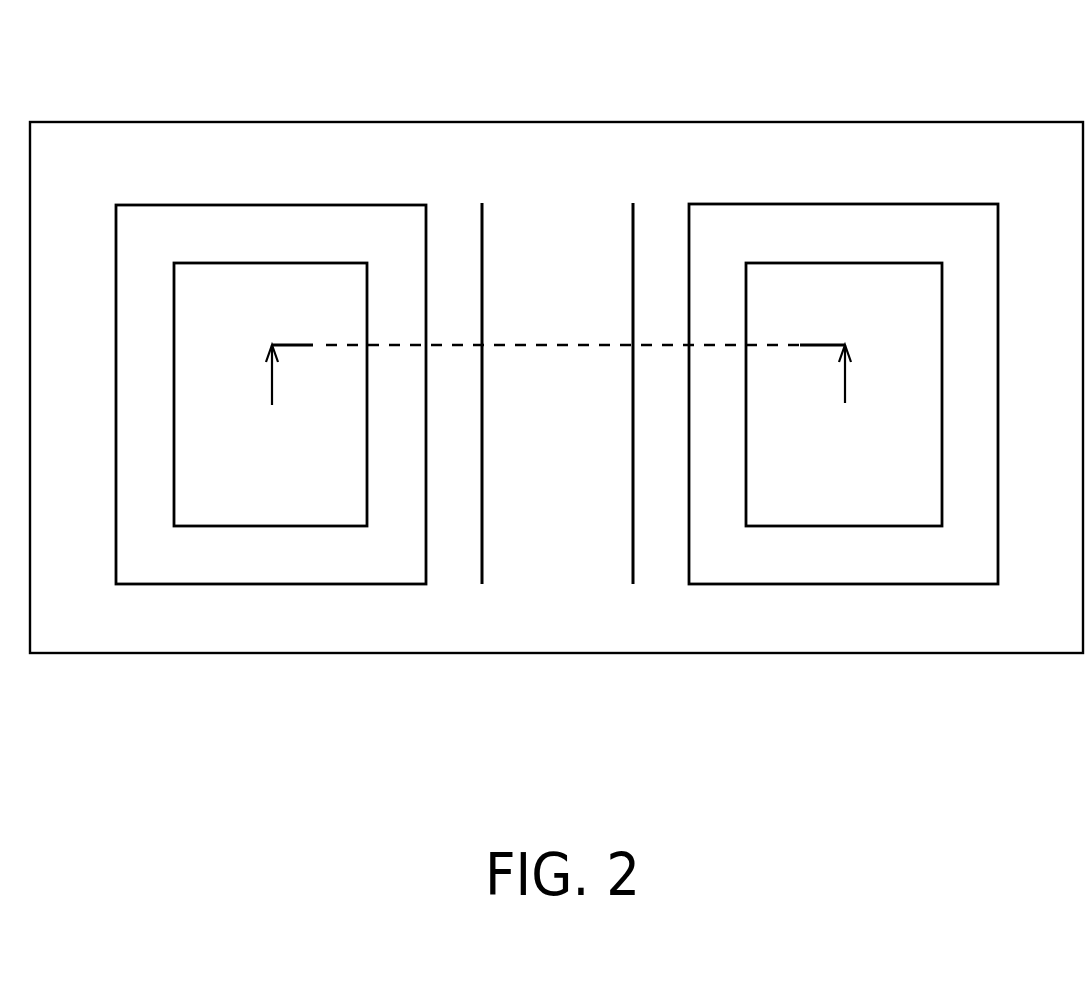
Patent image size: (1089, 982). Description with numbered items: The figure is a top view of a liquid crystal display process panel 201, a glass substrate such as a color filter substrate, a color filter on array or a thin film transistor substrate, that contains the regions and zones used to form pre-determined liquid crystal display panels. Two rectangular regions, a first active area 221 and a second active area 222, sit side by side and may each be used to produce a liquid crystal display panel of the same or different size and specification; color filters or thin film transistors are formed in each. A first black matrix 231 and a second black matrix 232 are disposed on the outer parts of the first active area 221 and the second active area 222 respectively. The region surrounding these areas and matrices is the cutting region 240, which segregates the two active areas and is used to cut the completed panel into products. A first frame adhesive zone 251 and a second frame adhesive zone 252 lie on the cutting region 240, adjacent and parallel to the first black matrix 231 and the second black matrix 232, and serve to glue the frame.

The liquid crystal display process panel 201 is at (633, 143).
The first active area 221 is at (297, 478).
The second active area 222 is at (870, 477).
The first black matrix 231 is at (297, 573).
The second black matrix 232 is at (870, 570).
The cutting region 240 is at (582, 318).
The first frame adhesive zone 251 is at (482, 188).
The second frame adhesive zone 252 is at (634, 597).